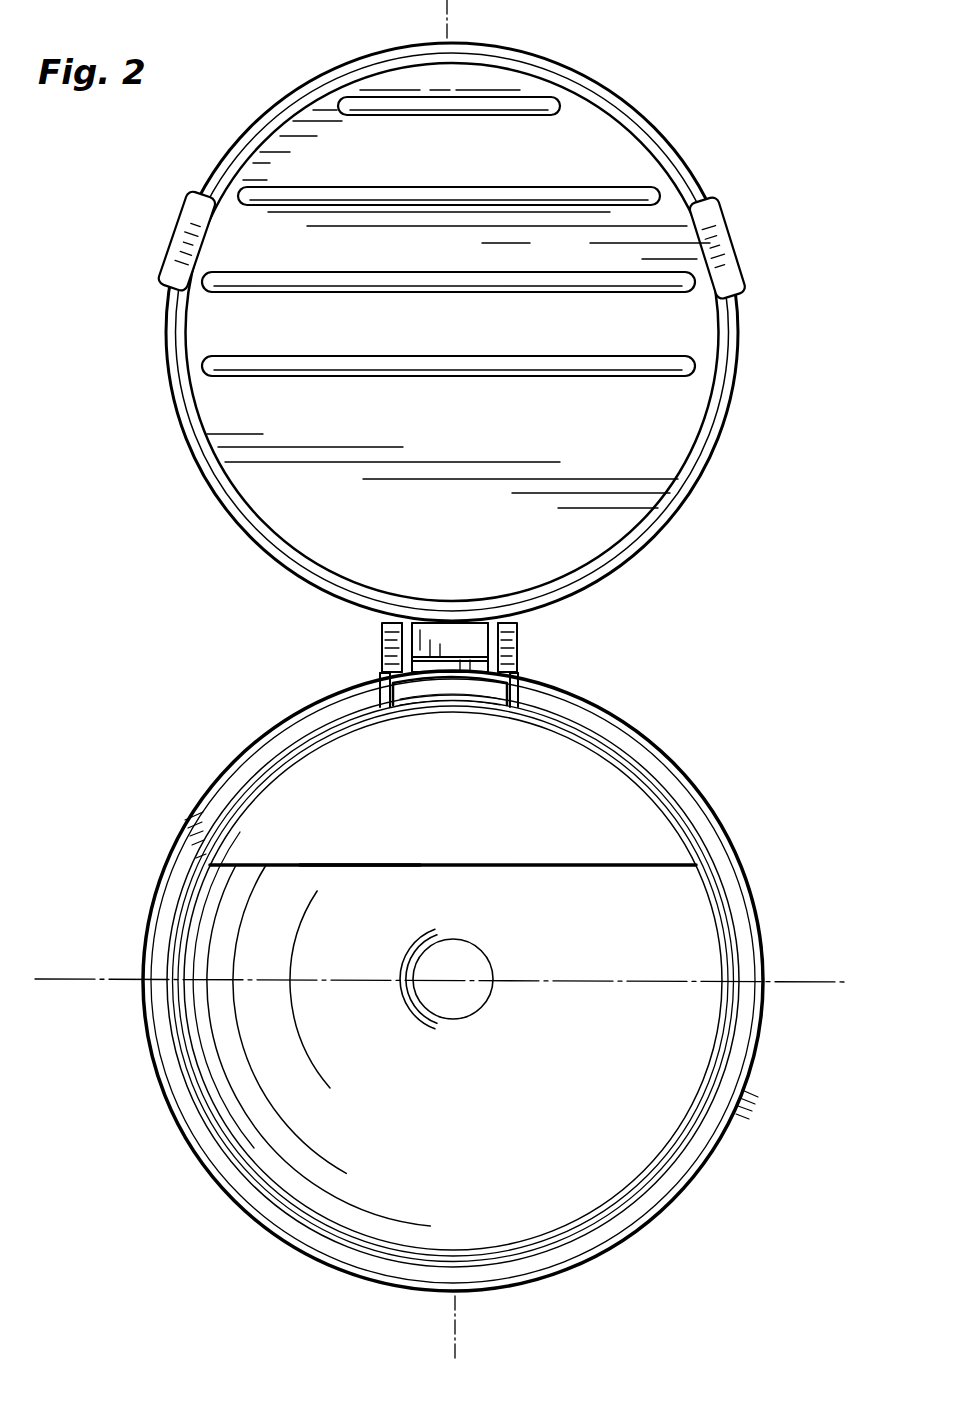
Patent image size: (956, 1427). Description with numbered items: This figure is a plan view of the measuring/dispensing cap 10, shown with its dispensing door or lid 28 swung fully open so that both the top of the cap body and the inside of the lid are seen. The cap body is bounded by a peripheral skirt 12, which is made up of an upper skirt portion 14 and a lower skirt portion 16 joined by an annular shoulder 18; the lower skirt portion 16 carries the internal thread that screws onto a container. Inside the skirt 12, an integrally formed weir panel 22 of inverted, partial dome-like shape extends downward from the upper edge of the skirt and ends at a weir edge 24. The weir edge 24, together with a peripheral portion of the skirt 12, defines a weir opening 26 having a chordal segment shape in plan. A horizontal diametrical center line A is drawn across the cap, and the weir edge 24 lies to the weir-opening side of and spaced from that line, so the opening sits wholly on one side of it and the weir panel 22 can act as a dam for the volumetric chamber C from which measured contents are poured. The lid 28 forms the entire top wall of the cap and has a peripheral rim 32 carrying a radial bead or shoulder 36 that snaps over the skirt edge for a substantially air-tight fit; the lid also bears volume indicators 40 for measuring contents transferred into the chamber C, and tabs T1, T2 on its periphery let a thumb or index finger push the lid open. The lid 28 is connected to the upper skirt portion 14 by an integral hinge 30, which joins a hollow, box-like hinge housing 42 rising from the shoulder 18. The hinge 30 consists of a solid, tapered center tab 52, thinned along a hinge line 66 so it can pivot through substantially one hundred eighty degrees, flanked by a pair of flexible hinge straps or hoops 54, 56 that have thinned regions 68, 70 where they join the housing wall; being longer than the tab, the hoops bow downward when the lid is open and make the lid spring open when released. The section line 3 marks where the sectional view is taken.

The measuring/dispensing cap 10 is at (250, 613).
The peripheral skirt 12 is at (760, 858).
The upper skirt portion 14 is at (262, 772).
The lower skirt portion 16 is at (148, 910).
The annular shoulder 18 is at (186, 834).
The weir panel 22 is at (591, 888).
The weir edge 24 is at (348, 863).
The weir opening 26 is at (536, 792).
The dispensing door or lid 28 is at (608, 92).
The integral hinge 30 is at (542, 652).
The peripheral rim 32 is at (655, 140).
The radial bead or shoulder 36 is at (685, 463).
The volume indicators 40 is at (498, 117).
The hinge housing 42 is at (542, 698).
The center tab 52 is at (450, 630).
The hinge strap or hoop 54 is at (380, 645).
The hinge strap or hoop 56 is at (510, 640).
The hinge line 66 is at (436, 680).
The thinned region 68 is at (382, 668).
The thinned region 70 is at (518, 674).
The tab T1 is at (172, 238).
The tab T2 is at (722, 248).
The diametrical center line A is at (792, 983).
The volumetric space or chamber C is at (345, 1150).
The section line 3- 3 is at (470, 1338).